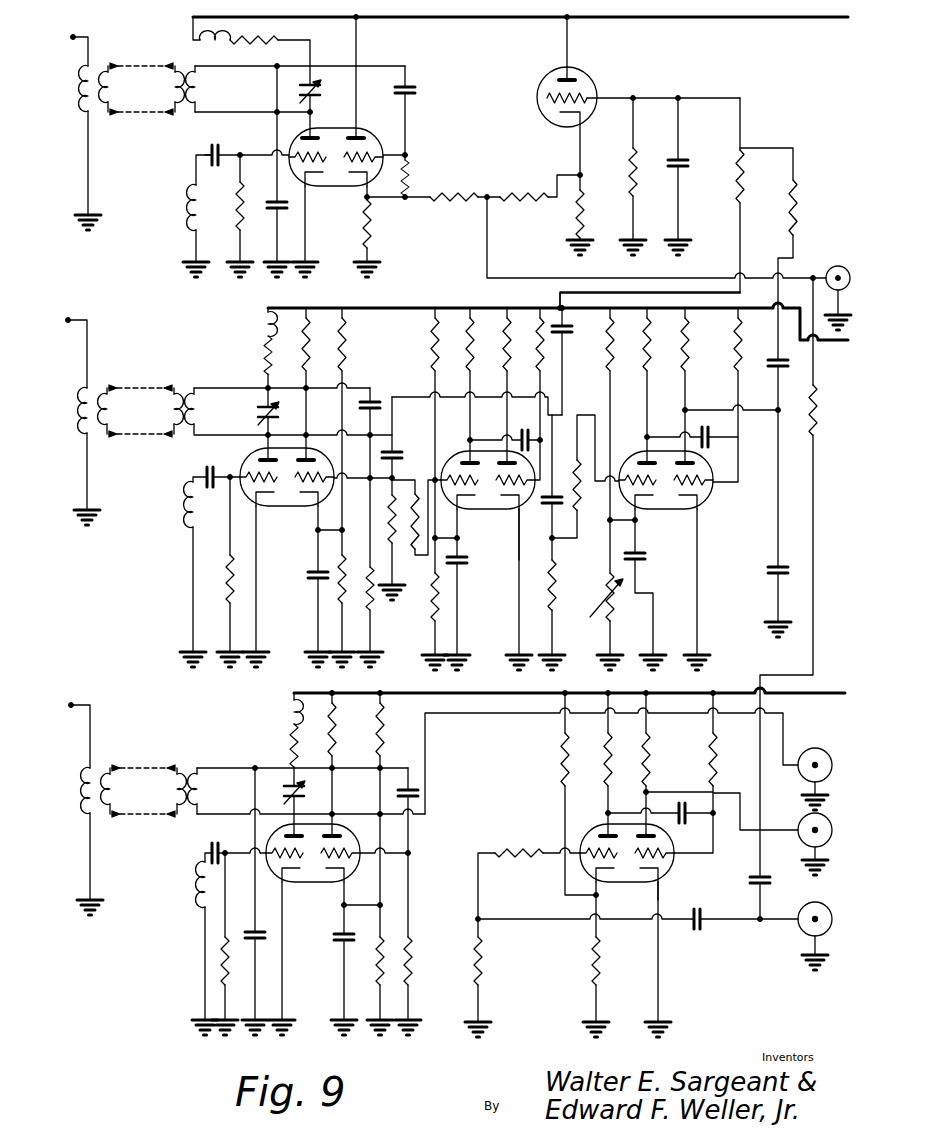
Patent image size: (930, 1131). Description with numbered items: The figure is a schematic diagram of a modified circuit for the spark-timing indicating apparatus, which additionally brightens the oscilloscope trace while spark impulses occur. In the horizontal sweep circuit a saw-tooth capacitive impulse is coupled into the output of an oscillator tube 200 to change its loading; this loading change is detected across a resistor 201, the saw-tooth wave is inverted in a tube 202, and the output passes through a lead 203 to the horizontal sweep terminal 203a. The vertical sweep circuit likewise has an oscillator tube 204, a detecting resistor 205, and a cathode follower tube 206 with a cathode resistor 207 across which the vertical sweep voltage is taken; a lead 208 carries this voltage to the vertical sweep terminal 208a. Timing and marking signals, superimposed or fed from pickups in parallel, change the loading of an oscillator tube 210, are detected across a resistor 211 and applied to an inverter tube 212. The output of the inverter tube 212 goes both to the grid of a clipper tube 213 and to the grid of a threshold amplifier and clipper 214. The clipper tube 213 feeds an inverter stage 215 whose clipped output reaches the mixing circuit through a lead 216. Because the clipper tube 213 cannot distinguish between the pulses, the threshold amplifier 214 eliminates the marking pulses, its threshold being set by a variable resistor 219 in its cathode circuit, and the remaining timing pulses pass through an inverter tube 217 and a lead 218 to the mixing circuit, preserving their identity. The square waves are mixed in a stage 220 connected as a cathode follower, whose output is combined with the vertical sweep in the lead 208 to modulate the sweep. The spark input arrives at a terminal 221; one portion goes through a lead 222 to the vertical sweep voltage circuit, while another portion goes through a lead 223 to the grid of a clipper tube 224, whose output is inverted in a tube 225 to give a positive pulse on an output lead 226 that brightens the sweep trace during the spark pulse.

The oscillator tube 200 is at (292, 872).
The resistor 201 is at (283, 737).
The tube 202 is at (348, 860).
The lead 203 is at (478, 714).
The horizontal sweep terminal 203a is at (813, 748).
The oscillator tube 204 is at (311, 187).
The detecting resistor 205 is at (289, 40).
The cathode follower tube 206 is at (371, 133).
The cathode resistor 207 is at (373, 230).
The lead 208 is at (487, 265).
The vertical sweep terminal 208a is at (837, 266).
The oscillator tube 210 is at (250, 465).
The resistor 211 is at (266, 347).
The inverter tube 212 is at (309, 500).
The clipper tube 213 is at (453, 472).
The threshold amplifier and clipper 214 is at (630, 470).
The inverter stage 215 is at (524, 490).
The lead 216 is at (738, 250).
The inverter tube 217 is at (702, 497).
The lead 218 is at (778, 148).
The variable resistor 219 is at (603, 594).
The stage 220 is at (541, 113).
The terminal 221 is at (804, 934).
The lead 222 is at (813, 580).
The lead 223 is at (551, 920).
The clipper tube 224 is at (590, 843).
The tube 225 is at (665, 867).
The output lead 226 is at (772, 829).